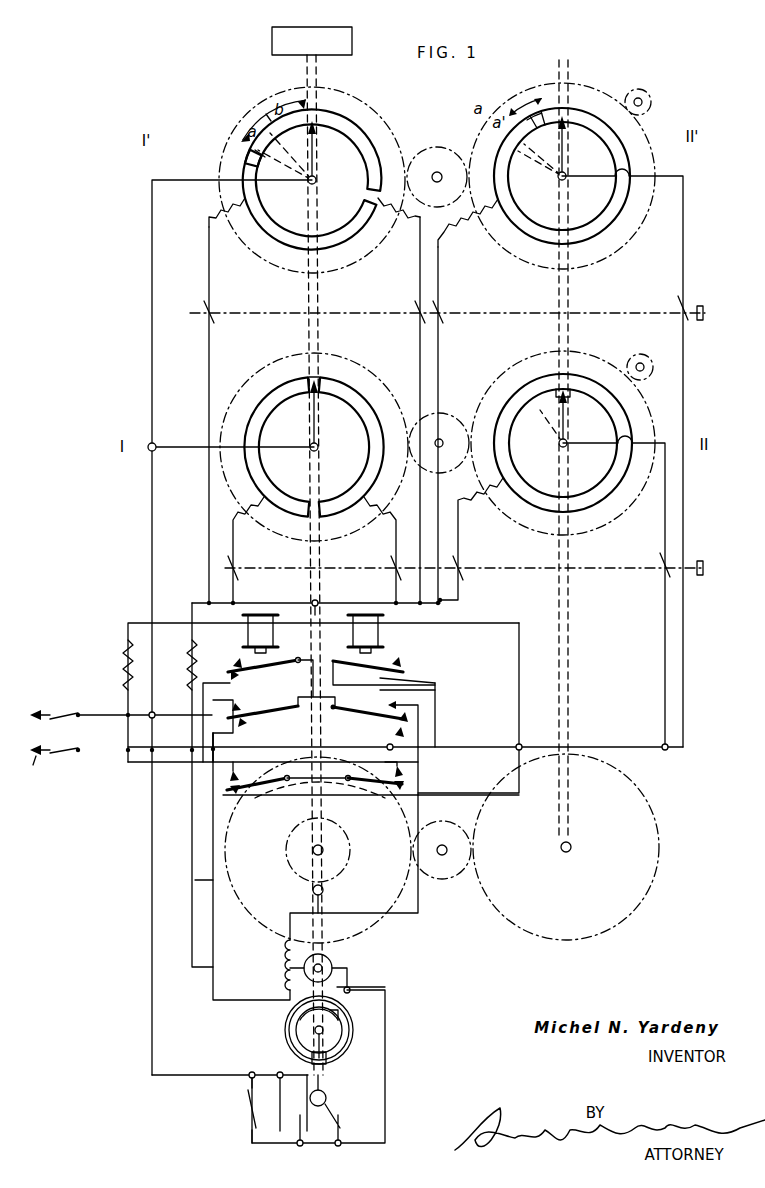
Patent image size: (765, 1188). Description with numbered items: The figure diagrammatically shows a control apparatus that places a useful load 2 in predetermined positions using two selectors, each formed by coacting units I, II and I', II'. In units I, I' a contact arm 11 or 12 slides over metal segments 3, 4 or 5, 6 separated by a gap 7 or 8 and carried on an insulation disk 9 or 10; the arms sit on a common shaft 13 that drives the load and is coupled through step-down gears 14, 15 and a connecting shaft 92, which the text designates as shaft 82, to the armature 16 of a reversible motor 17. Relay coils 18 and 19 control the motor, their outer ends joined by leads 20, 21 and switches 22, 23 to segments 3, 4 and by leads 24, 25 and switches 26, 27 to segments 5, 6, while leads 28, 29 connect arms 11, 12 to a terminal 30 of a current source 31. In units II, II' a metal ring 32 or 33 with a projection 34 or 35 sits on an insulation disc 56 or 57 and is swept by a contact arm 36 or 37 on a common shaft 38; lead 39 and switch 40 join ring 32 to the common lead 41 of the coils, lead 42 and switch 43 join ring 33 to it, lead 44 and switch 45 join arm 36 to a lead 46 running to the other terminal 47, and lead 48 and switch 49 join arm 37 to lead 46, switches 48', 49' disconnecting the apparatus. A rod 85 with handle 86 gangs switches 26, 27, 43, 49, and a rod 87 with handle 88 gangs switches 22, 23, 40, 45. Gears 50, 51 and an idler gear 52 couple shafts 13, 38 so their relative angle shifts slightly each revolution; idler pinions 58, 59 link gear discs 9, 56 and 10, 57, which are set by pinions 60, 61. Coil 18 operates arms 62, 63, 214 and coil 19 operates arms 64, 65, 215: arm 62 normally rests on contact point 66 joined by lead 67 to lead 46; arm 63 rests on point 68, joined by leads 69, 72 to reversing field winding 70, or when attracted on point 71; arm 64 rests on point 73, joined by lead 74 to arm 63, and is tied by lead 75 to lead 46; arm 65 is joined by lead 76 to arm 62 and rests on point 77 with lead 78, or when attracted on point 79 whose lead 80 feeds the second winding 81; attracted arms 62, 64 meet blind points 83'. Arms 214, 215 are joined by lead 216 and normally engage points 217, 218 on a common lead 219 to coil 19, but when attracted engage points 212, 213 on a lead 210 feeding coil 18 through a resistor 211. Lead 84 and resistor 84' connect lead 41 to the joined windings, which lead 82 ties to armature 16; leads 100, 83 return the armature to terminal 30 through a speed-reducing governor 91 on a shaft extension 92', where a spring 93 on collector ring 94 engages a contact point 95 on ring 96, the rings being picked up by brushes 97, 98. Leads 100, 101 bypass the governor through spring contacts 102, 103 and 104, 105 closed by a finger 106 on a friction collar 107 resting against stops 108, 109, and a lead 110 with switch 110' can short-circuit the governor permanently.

The useful load 2 is at (352, 36).
The metal segment 3 is at (280, 492).
The metal segment 4 is at (352, 491).
The metal segment 5 is at (270, 215).
The metal segment 6 is at (369, 180).
The gap or neutral point 7 is at (322, 368).
The gap or neutral point 8 is at (250, 154).
The insulation disk 9 is at (270, 372).
The insulation disk 10 is at (262, 110).
The contact arm 11 is at (318, 418).
The contact arm 12 is at (310, 160).
The common shaft 13 is at (320, 294).
The step-down gear 14 is at (311, 890).
The step-down gear 15 is at (286, 849).
The armature 16 is at (332, 962).
The reversible electric motor 17 is at (285, 973).
The relay coil 18 is at (268, 612).
The relay coil 19 is at (360, 612).
The lead 20 is at (236, 549).
The lead 21 is at (393, 539).
The switch 22 is at (242, 569).
The switch 23 is at (386, 563).
The lead 24 is at (207, 379).
The lead 25 is at (418, 353).
The switch 26 is at (213, 309).
The switch 27 is at (416, 307).
The lead 28 is at (150, 258).
The lead 29 is at (190, 448).
The terminal 30 is at (40, 708).
The source of current 31 is at (36, 745).
The metal ring 32 is at (520, 471).
The metal ring 33 is at (522, 203).
The projection 34 is at (556, 400).
The projection 35 is at (550, 162).
The contact arm 36 is at (568, 418).
The contact arm 37 is at (566, 148).
The common shaft 38 is at (570, 626).
The lead 39 is at (460, 521).
The switch 40 is at (462, 566).
The common lead 41 is at (322, 601).
The lead 42 is at (441, 363).
The switch 43 is at (445, 309).
The lead 44 is at (664, 612).
The switch 45 is at (670, 562).
The lead 46 is at (487, 745).
The terminal 47 is at (29, 769).
The lead 48 is at (635, 458).
The switch 48' is at (71, 700).
The switch 49 is at (695, 293).
The switch 49' is at (72, 765).
The gear 50 is at (240, 895).
The gear 51 is at (512, 920).
The idler gear 52 is at (435, 879).
The insulation disc 56 is at (590, 350).
The insulation disc 57 is at (537, 88).
The idler pinion 58 is at (448, 412).
The idler pinion 59 is at (436, 149).
The pinion 60 is at (648, 354).
The pinion 61 is at (650, 98).
The relay arm 62 is at (282, 664).
The relay arm 63 is at (270, 711).
The relay arm 64 is at (405, 669).
The relay arm 65 is at (349, 713).
The contact point 66 is at (240, 676).
The lead 67 is at (204, 692).
The contact point 68 is at (248, 723).
The lead 69 is at (210, 761).
The reversing field winding 70 is at (280, 983).
The contact point 71 is at (241, 708).
The lead 72 is at (211, 718).
The contact point 73 is at (433, 680).
The lead 74 is at (437, 689).
The lead 75 is at (437, 692).
The lead 76 is at (312, 679).
The contact point 77 is at (410, 726).
The lead 78 is at (394, 734).
The contact point 79 is at (420, 707).
The lead 80 is at (421, 766).
The reversing field winding 81 is at (286, 946).
The shaft 82 is at (286, 969).
The lead 83 is at (135, 761).
The blind point 83' is at (321, 645).
The lead 84 is at (190, 770).
The resistor 84' is at (178, 664).
The common rod 85 is at (620, 310).
The handle 86 is at (705, 310).
The common rod 87 is at (616, 566).
The handle 88 is at (705, 568).
The speed reducing governor 91 is at (272, 1022).
The conductor 92 is at (354, 867).
The shaft extension 92' is at (362, 970).
The spring 93 is at (335, 1036).
The collector ring 94 is at (345, 1034).
The contact point 95 is at (340, 1013).
The collector ring 96 is at (286, 1037).
The contact brush 97 is at (310, 1059).
The contact brush 98 is at (352, 991).
The lead 100 is at (352, 987).
The lead 101 is at (285, 1108).
The spring contact 102 is at (360, 1143).
The spring contact 103 is at (338, 1146).
The spring contact 104 is at (298, 1145).
The spring contact 105 is at (252, 1143).
The finger 106 is at (328, 1128).
The collar 107 is at (327, 1096).
The stop 108 is at (340, 1109).
The stop 109 is at (307, 1110).
The lead 110 is at (222, 1107).
The switch 110' is at (212, 1107).
The common lead 210 is at (128, 622).
The resistor 211 is at (124, 657).
The contact point 212 is at (231, 774).
The contact point 213 is at (410, 771).
The relay arm 214 is at (275, 797).
The relay arm 215 is at (398, 792).
The lead 216 is at (332, 790).
The contact point 217 is at (232, 793).
The contact point 218 is at (406, 790).
The common lead 219 is at (522, 690).